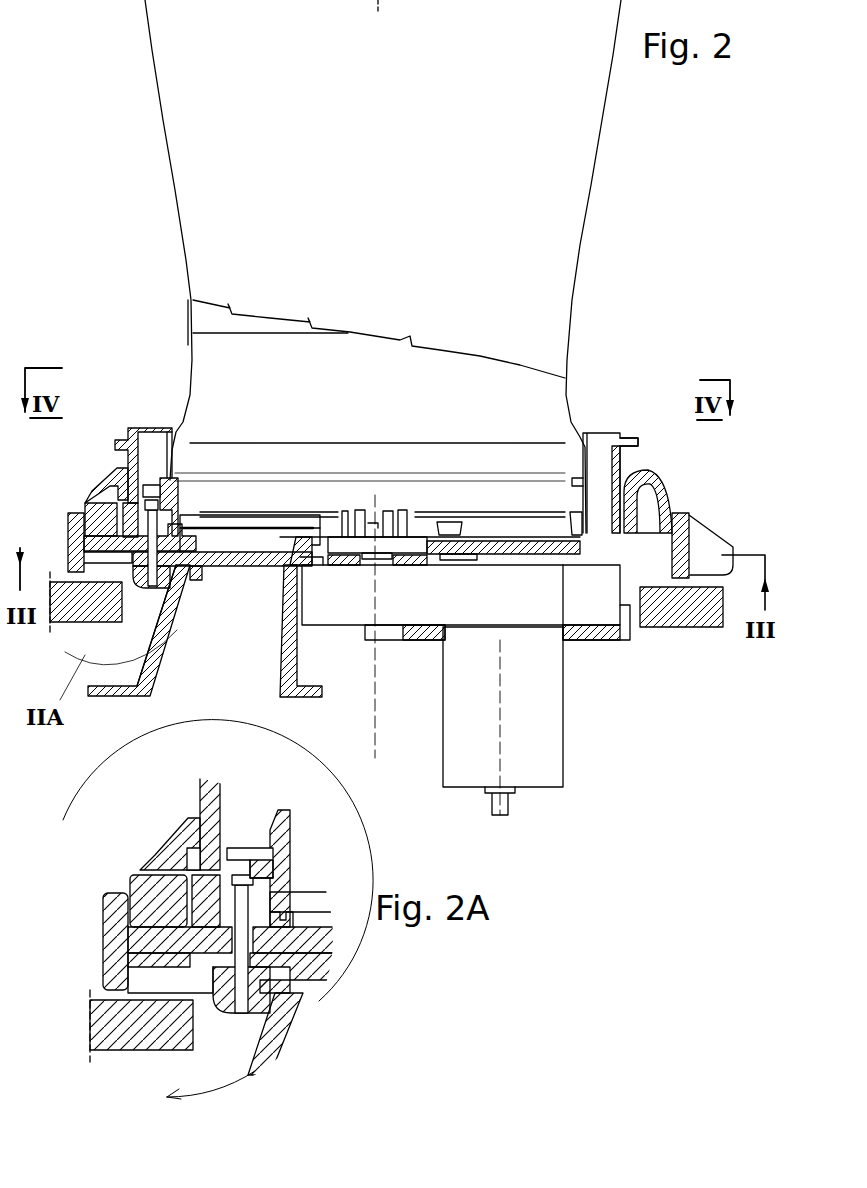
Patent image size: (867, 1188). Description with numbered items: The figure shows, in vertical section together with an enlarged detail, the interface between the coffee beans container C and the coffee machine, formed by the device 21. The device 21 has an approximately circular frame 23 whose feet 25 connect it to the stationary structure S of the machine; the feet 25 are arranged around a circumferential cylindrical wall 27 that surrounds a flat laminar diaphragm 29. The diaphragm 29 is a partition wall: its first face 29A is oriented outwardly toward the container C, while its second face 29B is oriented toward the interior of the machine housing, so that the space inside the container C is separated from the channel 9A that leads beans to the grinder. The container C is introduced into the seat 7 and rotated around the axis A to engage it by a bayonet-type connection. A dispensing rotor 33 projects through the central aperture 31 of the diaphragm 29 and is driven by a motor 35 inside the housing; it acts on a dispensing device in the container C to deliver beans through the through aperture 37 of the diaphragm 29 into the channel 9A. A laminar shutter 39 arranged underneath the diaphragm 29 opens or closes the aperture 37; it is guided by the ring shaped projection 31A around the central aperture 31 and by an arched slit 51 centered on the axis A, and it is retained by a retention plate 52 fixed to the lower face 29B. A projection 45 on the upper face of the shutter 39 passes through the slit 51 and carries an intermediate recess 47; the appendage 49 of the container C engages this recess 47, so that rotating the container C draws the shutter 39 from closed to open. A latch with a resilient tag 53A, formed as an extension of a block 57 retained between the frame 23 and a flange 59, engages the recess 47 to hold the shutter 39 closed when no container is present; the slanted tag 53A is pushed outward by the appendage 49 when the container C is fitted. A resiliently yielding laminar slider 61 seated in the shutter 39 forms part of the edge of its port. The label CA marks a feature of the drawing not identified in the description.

In FIG. 2, the coffee beans container C is at (568, 217).
In FIG. 2, the seat 7 is at (607, 418).
In FIG. 2, the channel 9A is at (160, 655).
In FIG. 2A, the channel 9A is at (293, 1027).
In FIG. 2, the device 21 is at (656, 441).
In FIG. 2, the frame 23 is at (694, 505).
In FIG. 2, the feet 25 is at (712, 542).
In FIG. 2, the circumferential cylindrical wall 27 is at (70, 541).
In FIG. 2A, the circumferential cylindrical wall 27 is at (113, 942).
In FIG. 2, the diaphragm 29 is at (582, 572).
In FIG. 2, the first face 29A is at (648, 512).
In FIG. 2, the second face 29B is at (596, 602).
In FIG. 2, the central aperture 31 is at (416, 566).
In FIG. 2, the ring shaped projection 31A is at (308, 567).
In FIG. 2, the dispensing rotor 33 is at (380, 510).
In FIG. 2, the motor 35 is at (567, 744).
In FIG. 2, the through aperture 37 is at (270, 538).
In FIG. 2, the shutter 39 is at (266, 571).
In FIG. 2A, the shutter 39 is at (280, 993).
In FIG. 2, the projection 45 is at (80, 548).
In FIG. 2A, the projection 45 is at (333, 936).
In FIG. 2A, the intermediate recess 47 is at (238, 876).
In FIG. 2, the appendage 49 is at (165, 500).
In FIG. 2A, the appendage 49 is at (273, 893).
In FIG. 2, the arched slit 51 is at (198, 555).
In FIG. 2A, the arched slit 51 is at (172, 960).
In FIG. 2, the retention plate 52 is at (140, 582).
In FIG. 2A, the retention plate 52 is at (118, 1004).
In FIG. 2, the resilient tag 53A is at (138, 485).
In FIG. 2A, the resilient tag 53A is at (203, 885).
In FIG. 2, the block 57 is at (100, 506).
In FIG. 2A, the block 57 is at (150, 887).
In FIG. 2, the flange 59 is at (100, 496).
In FIG. 2A, the flange 59 is at (207, 803).
In FIG. 2, the laminar slider 61 is at (175, 656).
In FIG. 2, the axis A is at (372, 639).
In FIG. 2, the seal CA is at (240, 527).
In FIG. 2, the stationary structure S is at (62, 626).